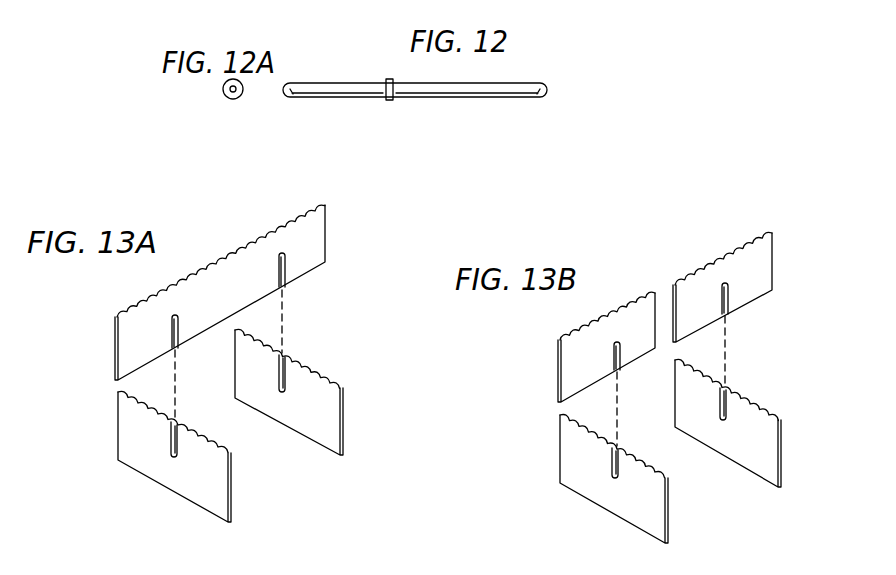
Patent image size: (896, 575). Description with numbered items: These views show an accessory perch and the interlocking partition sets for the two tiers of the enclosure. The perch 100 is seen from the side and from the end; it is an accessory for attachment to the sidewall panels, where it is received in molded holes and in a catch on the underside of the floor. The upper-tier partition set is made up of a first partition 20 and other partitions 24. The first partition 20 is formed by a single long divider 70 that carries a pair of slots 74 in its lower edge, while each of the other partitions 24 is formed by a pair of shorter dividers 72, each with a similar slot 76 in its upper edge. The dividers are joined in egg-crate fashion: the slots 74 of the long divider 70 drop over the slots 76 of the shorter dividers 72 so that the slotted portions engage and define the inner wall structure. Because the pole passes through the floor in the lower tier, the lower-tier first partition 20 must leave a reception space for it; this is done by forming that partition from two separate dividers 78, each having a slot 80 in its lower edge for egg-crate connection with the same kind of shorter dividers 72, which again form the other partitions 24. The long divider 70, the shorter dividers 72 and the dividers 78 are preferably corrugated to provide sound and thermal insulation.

In FIG. 12A, the perch 100 is at (226, 98).
In FIG. 12, the perch 100 is at (522, 82).
In FIG. 13A, the first partition 20 is at (293, 215).
In FIG. 13B, the first partition 20 is at (696, 267).
In FIG. 13A, the long divider 70 is at (328, 228).
In FIG. 13A, the slot 74 is at (287, 291).
In FIG. 13A, the partition 24 is at (190, 428).
In FIG. 13B, the partition 24 is at (658, 468).
In FIG. 13A, the shorter divider 72 is at (343, 417).
In FIG. 13B, the shorter divider 72 is at (783, 448).
In FIG. 13A, the slot 76 is at (276, 392).
In FIG. 13B, the slot 76 is at (618, 452).
In FIG. 13B, the divider 78 is at (777, 260).
In FIG. 13B, the slot 80 is at (728, 312).